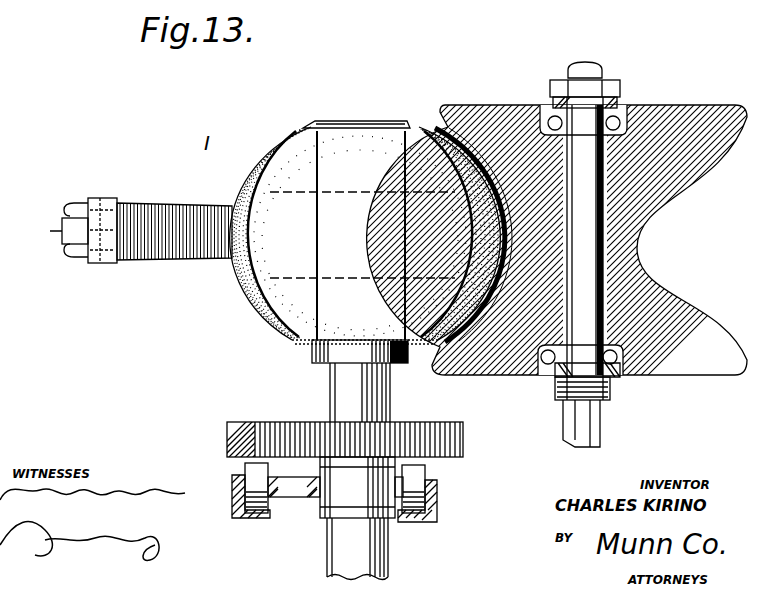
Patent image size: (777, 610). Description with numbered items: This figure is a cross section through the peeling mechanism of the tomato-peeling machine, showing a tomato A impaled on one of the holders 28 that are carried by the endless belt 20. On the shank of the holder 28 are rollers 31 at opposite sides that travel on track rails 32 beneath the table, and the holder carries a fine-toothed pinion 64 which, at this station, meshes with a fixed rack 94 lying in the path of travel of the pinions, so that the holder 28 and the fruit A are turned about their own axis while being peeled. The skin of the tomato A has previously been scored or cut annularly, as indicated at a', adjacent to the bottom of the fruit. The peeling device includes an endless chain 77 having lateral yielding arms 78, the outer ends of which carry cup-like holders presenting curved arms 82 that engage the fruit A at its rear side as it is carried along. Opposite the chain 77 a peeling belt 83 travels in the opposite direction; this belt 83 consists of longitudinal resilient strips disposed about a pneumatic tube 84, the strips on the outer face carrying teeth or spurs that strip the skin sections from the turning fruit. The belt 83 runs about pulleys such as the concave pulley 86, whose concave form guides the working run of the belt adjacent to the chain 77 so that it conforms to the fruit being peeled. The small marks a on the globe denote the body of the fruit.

The endless chain 77 is at (50, 231).
The lateral yielding arm 78 is at (176, 205).
The curved arm 82 is at (354, 121).
The peeling belt 83 is at (454, 126).
The pneumatic tube 84 is at (488, 130).
The pulley 86 is at (642, 232).
The pinion 64 is at (432, 422).
The fixed rack 94 is at (245, 422).
The roller 31 is at (245, 468).
The track rail 32 is at (262, 518).
The endless belt 20 is at (312, 497).
The holder 28 is at (340, 555).
The globe wall a is at (296, 233).
The annular score a' is at (359, 351).
The tomato A is at (240, 290).